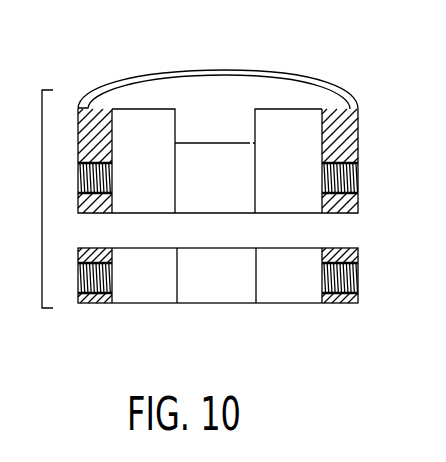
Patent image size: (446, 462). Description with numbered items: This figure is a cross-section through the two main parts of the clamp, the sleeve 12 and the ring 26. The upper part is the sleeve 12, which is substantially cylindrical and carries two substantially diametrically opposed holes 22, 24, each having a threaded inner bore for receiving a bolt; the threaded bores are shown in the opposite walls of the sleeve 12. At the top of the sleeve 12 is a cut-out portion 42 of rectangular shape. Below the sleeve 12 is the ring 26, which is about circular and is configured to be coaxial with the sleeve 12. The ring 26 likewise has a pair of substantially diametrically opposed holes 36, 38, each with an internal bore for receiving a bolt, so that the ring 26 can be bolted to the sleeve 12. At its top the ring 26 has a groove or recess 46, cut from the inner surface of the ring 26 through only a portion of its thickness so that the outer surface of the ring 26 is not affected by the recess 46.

The sleeve 12 is at (105, 85).
The cut-out portion 42 is at (219, 116).
The hole 22 is at (85, 180).
The hole 24 is at (348, 173).
The ring 26 is at (285, 298).
The groove or recess 46 is at (209, 294).
The hole 38 is at (80, 288).
The hole 36 is at (346, 281).